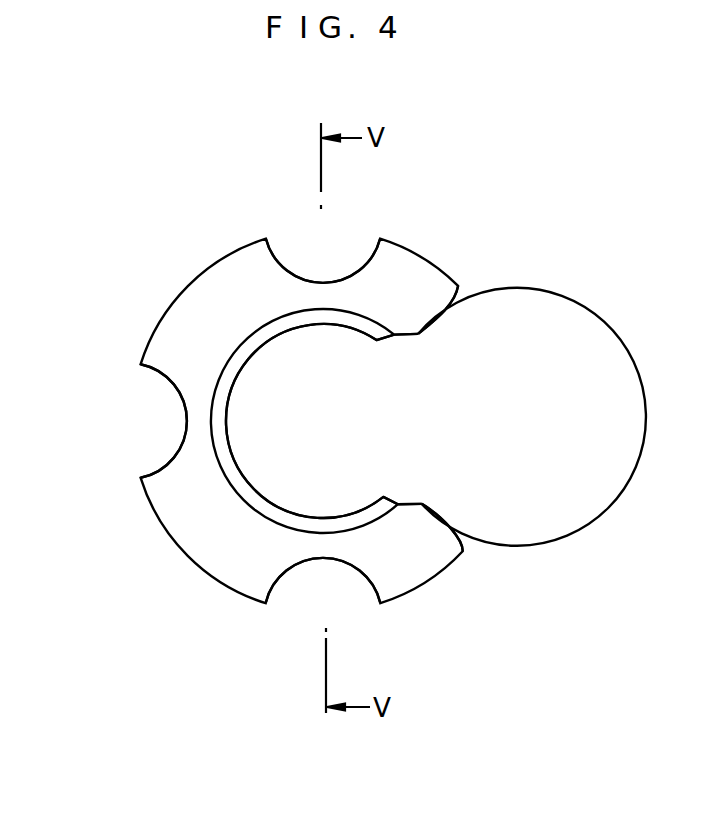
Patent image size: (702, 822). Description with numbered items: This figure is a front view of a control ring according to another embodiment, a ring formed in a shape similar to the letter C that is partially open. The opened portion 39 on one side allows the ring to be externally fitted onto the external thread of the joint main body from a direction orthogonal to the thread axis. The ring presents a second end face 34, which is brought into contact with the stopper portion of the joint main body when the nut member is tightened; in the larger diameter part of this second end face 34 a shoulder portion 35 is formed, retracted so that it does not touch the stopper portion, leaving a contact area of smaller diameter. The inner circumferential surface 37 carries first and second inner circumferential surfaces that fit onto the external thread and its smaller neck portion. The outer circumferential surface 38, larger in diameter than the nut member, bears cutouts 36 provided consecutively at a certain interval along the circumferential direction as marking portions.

The second end face 34 is at (236, 476).
The shoulder portion 35 is at (242, 320).
The cutouts 36 is at (360, 268).
The inner circumferential surface 37 is at (330, 330).
The outer circumferential surface 38 is at (433, 262).
The opened portion 39 is at (403, 338).